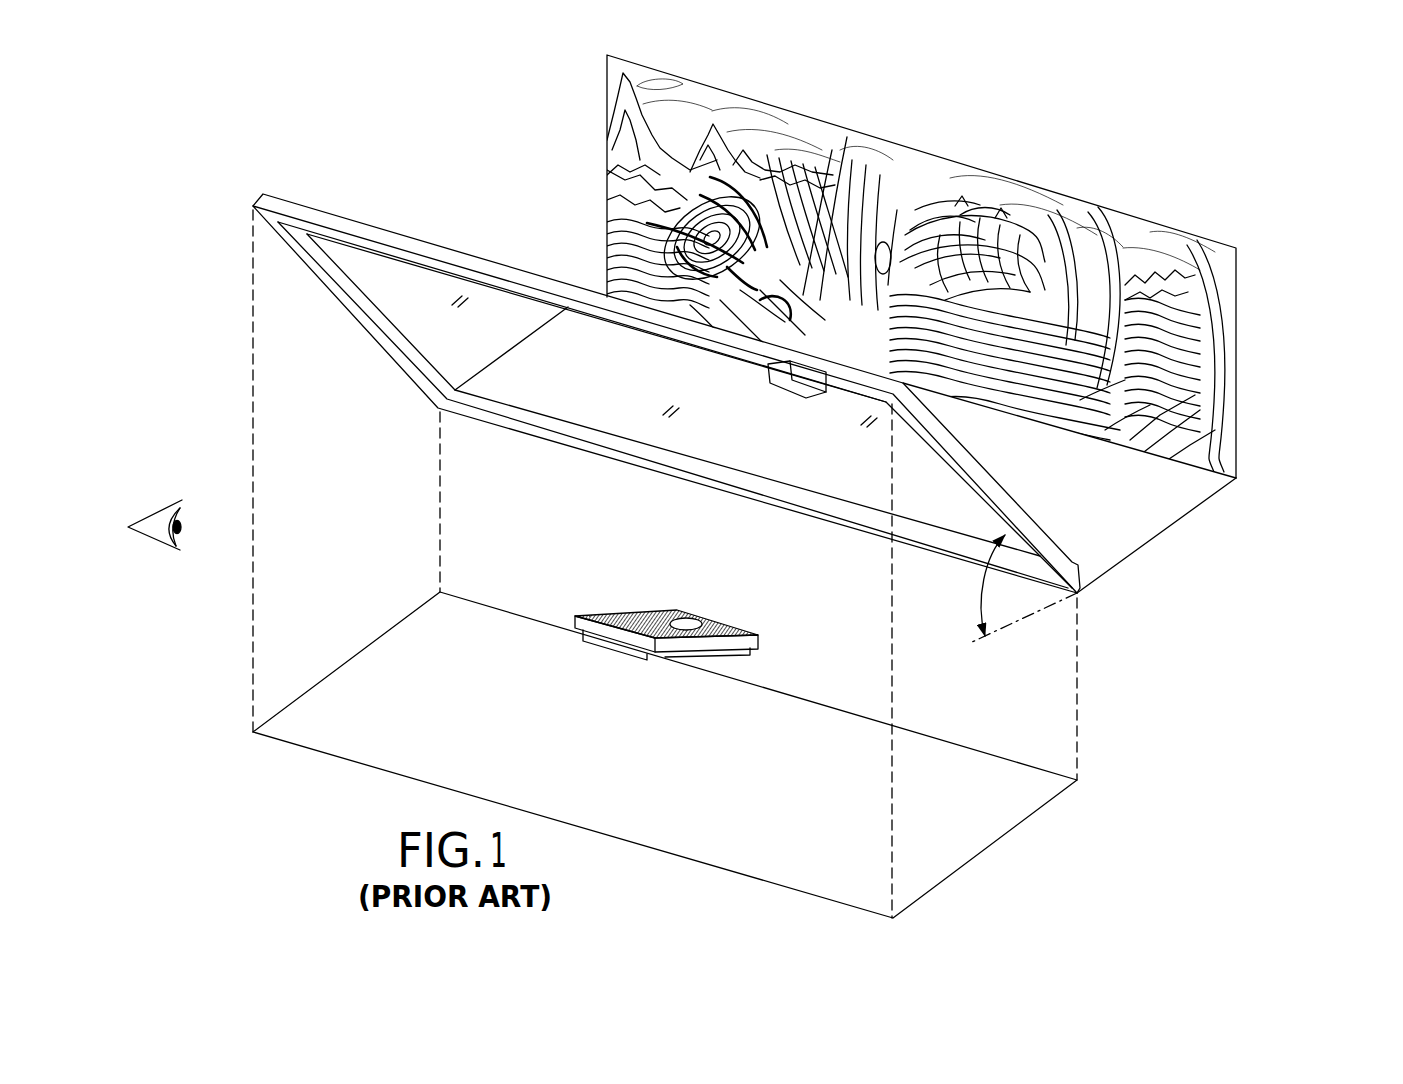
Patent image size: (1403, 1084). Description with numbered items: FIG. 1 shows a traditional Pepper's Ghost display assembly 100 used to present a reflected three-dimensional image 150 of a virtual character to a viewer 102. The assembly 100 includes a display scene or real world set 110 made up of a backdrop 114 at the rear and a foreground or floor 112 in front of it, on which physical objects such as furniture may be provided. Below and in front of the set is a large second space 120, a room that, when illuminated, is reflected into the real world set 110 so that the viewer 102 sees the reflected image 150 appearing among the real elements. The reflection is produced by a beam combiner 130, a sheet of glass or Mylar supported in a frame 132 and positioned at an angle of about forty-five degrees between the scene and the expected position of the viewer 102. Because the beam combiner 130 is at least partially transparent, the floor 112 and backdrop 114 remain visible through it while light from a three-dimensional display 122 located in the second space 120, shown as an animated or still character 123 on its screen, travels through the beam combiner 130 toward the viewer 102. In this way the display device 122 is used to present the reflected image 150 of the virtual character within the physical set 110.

The Pepper's Ghost display assembly 100 is at (1114, 152).
The viewer 102 is at (146, 514).
The real world set 110 is at (1225, 516).
The floor 112 is at (1112, 538).
The backdrop 114 is at (1240, 404).
The large second space 120 is at (1104, 772).
The 3D display 122 is at (658, 675).
The animated or still character 123 is at (698, 615).
The beam combiner 130 is at (436, 331).
The frame 132 is at (236, 194).
The reflected image 150 is at (648, 224).